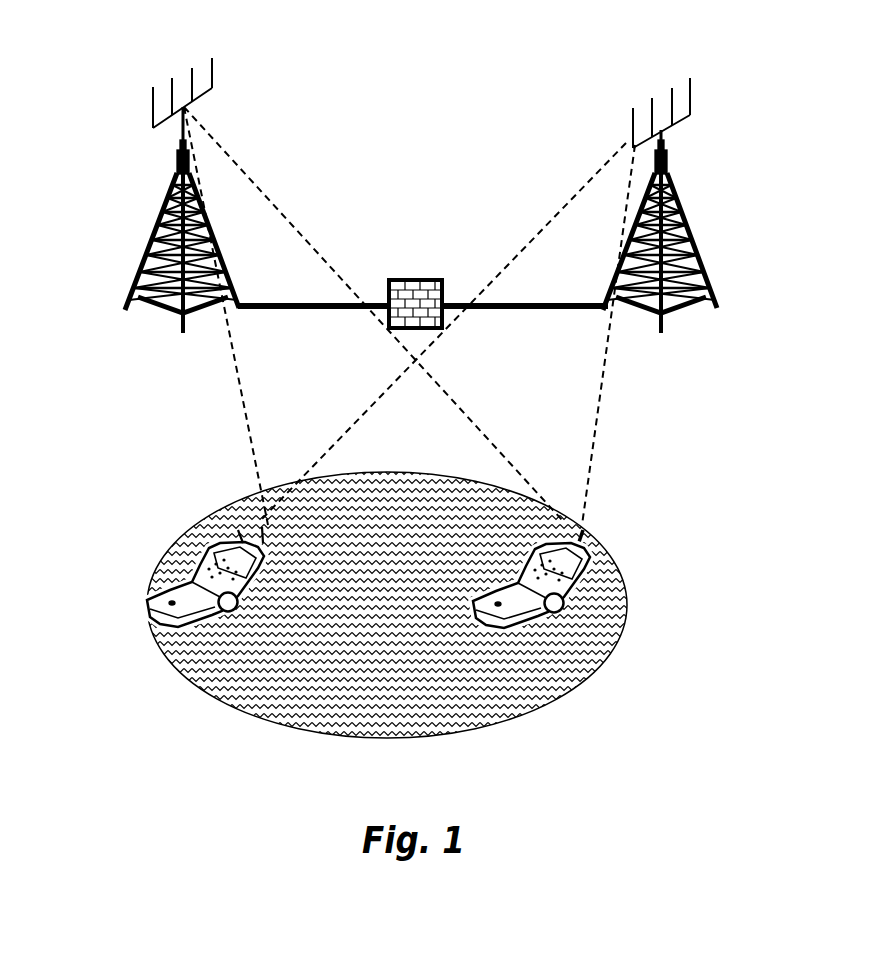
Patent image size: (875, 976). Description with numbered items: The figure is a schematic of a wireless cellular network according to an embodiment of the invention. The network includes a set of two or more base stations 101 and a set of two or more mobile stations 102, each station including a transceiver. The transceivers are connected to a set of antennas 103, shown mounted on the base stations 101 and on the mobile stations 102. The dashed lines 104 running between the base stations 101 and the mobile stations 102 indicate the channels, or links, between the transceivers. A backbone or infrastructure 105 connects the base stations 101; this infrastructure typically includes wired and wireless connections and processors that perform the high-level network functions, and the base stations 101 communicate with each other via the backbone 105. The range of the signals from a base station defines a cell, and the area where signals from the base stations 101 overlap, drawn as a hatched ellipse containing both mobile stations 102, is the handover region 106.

The base stations 101 is at (218, 250).
The mobile stations 102 is at (174, 554).
The antennas 103 is at (686, 76).
The dashed lines 104 is at (358, 417).
The backbone or infrastructure 105 is at (390, 280).
The handover region 106 is at (158, 652).